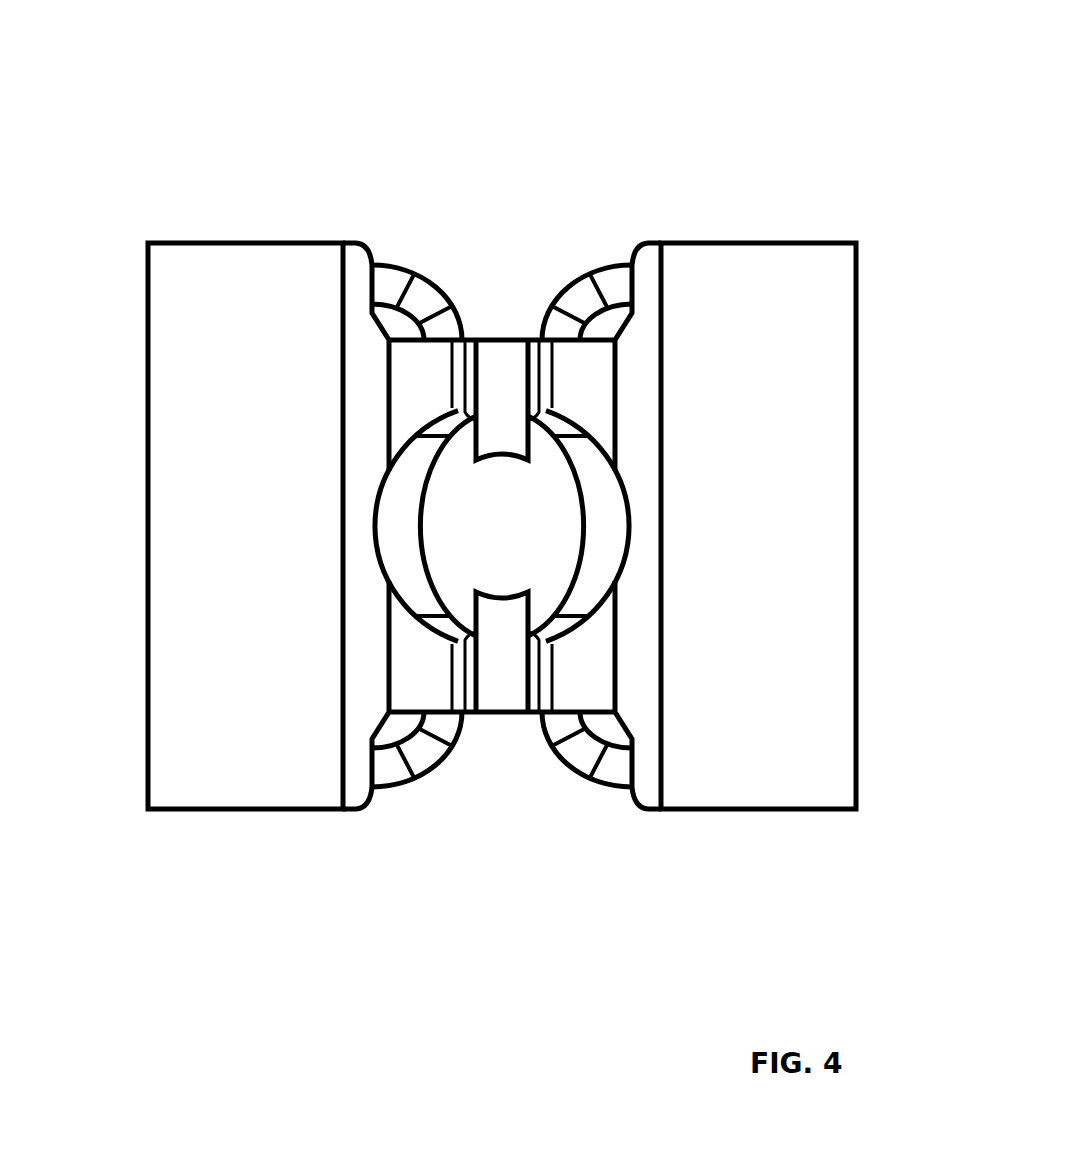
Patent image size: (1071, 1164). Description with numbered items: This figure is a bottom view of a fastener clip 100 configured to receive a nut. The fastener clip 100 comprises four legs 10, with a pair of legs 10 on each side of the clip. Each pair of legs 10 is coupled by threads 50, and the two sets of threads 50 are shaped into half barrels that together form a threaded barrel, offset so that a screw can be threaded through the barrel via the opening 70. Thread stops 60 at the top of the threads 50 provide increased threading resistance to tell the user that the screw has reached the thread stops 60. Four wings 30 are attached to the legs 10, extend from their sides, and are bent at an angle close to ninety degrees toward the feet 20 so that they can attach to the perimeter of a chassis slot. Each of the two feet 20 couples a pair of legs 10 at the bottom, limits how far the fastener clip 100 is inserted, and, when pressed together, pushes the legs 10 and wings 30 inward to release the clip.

The fastener clip 100 is at (790, 77).
The legs 10 is at (417, 373).
The feet 20 is at (207, 733).
The wings/paddles 30 is at (422, 292).
The threads 50 is at (418, 526).
The thread stops 60 is at (507, 420).
The opening 70 is at (520, 511).